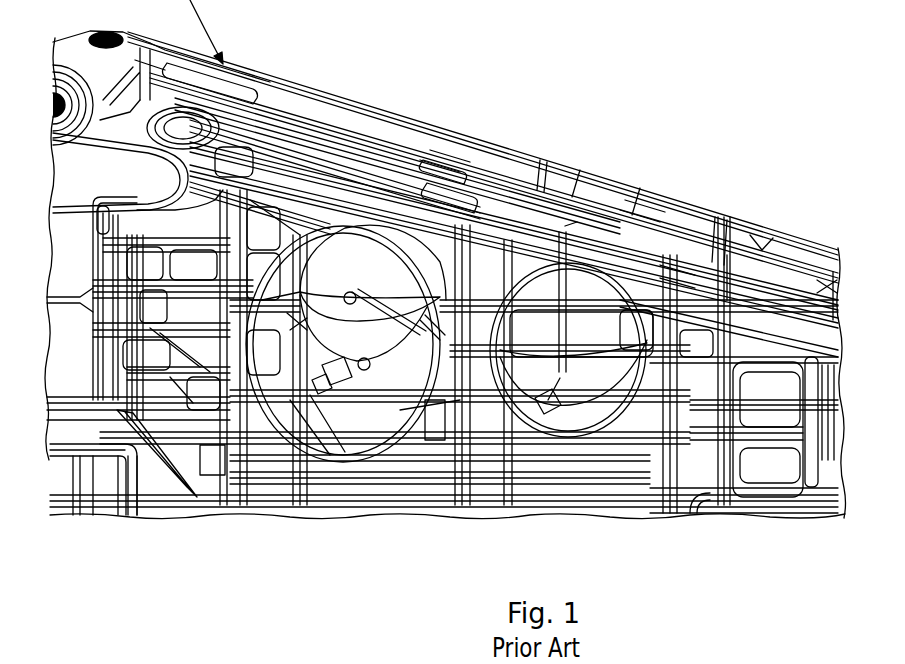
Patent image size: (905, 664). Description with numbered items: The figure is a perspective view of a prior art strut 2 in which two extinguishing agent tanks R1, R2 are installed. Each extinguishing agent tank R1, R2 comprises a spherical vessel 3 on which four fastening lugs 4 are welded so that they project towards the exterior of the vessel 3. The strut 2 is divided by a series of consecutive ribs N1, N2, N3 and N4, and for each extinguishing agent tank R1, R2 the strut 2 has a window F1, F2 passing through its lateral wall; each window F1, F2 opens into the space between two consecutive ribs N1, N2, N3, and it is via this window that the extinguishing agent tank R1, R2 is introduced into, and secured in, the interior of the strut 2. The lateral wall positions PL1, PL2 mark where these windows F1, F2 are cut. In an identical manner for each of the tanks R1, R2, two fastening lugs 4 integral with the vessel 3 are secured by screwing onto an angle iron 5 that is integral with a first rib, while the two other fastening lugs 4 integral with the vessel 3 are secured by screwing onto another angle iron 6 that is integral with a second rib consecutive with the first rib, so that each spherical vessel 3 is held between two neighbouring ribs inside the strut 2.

The rib N1 is at (283, 88).
The rib N2 is at (470, 235).
The rib N3 is at (727, 255).
The fourth node N4 is at (835, 272).
The strut 2 is at (168, 498).
The spherical vessel 3 is at (407, 262).
The fastening lugs 4 is at (242, 500).
The angle iron 5 is at (347, 262).
The angle iron 6 is at (437, 420).
The extinguishing agent tank R1 is at (450, 153).
The extinguishing agent tank R2 is at (640, 195).
The window F1 is at (330, 457).
The window F2 is at (668, 260).
The first load point PL1 is at (210, 450).
The second load point PL2 is at (572, 222).